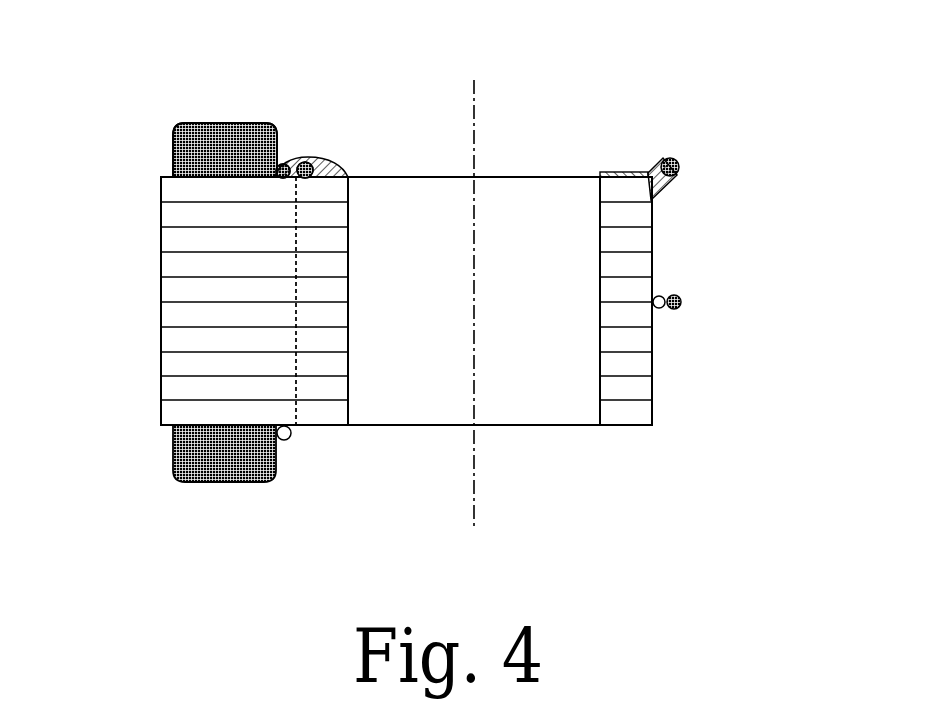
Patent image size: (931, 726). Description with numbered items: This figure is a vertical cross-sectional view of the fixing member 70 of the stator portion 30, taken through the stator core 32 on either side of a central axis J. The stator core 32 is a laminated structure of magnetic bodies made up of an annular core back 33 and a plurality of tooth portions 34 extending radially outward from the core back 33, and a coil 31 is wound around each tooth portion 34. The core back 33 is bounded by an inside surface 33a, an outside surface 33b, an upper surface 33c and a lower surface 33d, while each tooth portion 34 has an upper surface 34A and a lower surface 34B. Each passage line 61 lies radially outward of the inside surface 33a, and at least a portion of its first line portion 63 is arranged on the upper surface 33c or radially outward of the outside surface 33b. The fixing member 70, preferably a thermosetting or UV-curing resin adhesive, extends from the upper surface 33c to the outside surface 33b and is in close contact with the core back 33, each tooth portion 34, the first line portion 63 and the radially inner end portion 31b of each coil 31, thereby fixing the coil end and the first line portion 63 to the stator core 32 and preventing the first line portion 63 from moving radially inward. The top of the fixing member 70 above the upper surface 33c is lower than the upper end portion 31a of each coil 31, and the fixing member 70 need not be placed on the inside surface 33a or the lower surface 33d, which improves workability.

The stator portion 30 is at (133, 118).
The coil 31 is at (173, 174).
The upper end portion of coil 31a is at (215, 116).
The radially inner end portion of coil 31b is at (292, 162).
The stator core 32 is at (160, 176).
The core back 33 is at (350, 258).
The inside surface of core back 33a is at (350, 240).
The outside surface of core back 33b is at (296, 240).
The upper surface of core back 33c is at (333, 172).
The lower surface of core back 33d is at (318, 428).
The tooth portion 34 is at (160, 283).
The upper surface of tooth portion 34A is at (243, 172).
The lower surface of tooth portion 34B is at (226, 428).
The passage line 61 is at (310, 162).
The first line portion 63 is at (319, 165).
The fixing member 70 is at (336, 158).
The axis J is at (474, 106).